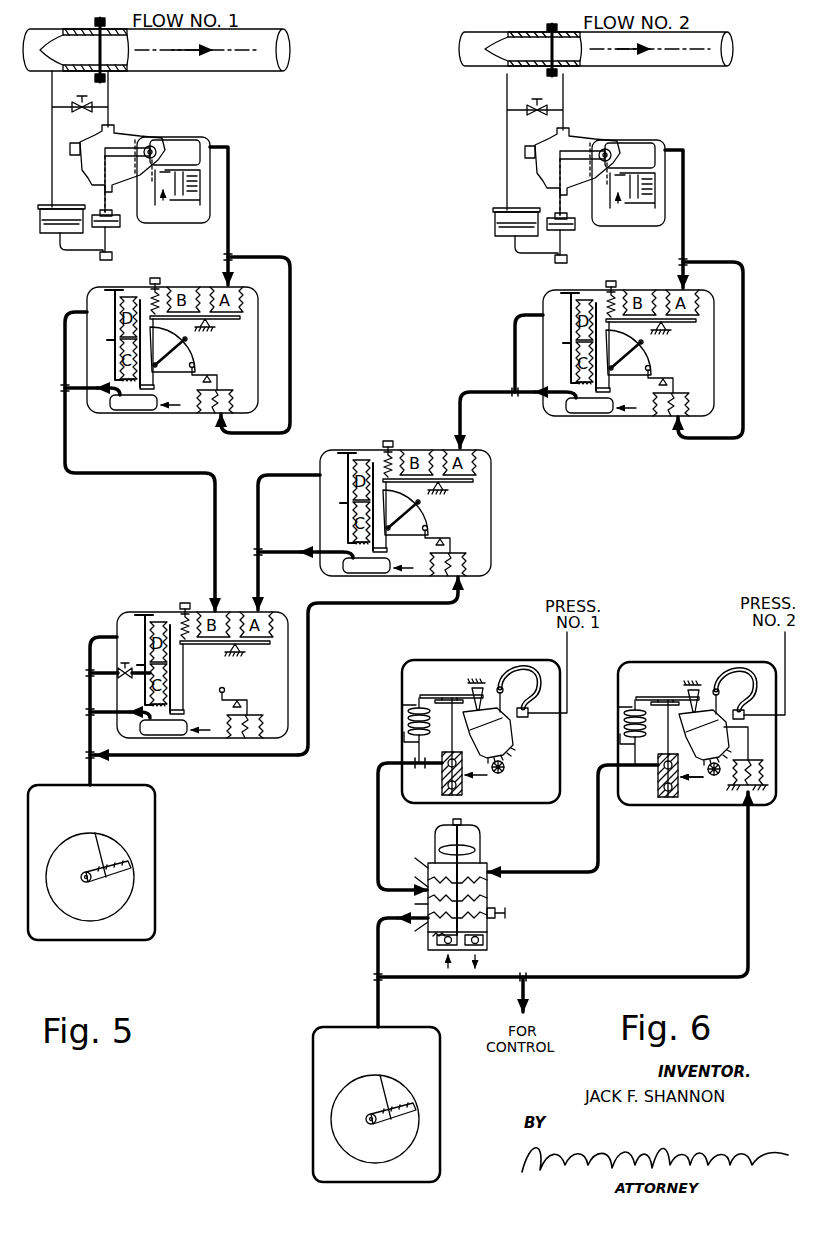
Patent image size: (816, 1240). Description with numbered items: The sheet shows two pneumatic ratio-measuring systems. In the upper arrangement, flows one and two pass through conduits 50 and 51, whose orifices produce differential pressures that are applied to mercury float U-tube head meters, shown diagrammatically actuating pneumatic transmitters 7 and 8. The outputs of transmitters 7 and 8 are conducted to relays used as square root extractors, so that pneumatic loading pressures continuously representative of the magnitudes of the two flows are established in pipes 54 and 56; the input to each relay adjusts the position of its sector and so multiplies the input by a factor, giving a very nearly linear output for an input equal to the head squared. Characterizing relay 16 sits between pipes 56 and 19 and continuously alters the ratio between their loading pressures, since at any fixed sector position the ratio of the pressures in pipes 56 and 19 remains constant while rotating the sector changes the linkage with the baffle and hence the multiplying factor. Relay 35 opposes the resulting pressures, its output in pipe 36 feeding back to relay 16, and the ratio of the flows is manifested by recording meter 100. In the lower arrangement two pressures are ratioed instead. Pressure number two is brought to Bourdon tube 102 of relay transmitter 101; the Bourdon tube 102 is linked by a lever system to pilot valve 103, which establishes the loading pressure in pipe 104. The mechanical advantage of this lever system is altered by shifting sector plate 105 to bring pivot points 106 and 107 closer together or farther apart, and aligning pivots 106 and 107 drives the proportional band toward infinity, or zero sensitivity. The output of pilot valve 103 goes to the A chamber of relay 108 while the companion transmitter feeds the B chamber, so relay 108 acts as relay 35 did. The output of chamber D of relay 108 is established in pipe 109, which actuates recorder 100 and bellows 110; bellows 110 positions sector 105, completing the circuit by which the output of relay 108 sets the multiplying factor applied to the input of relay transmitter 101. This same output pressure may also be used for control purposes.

In FIG. 5, the pneumatic transmitter 7 is at (190, 137).
In FIG. 5, the pneumatic transmitter 8 is at (650, 137).
In FIG. 5, the characterizing relay 16 is at (491, 512).
In FIG. 5, the pipe 19 is at (259, 518).
In FIG. 5, the relay 35 is at (157, 612).
In FIG. 5, the pipe 36 is at (250, 758).
In FIG. 5, the conduit 50 is at (253, 73).
In FIG. 5, the conduit 51 is at (712, 70).
In FIG. 5, the pipe 54 is at (214, 514).
In FIG. 5, the pipe 56 is at (458, 392).
In FIG. 5, the recording meter 100 is at (155, 843).
In FIG. 6, the recording meter 100 is at (313, 1070).
In FIG. 6, the relay transmitter 101 is at (695, 732).
In FIG. 6, the Bourdon tube 102 is at (733, 665).
In FIG. 6, the pilot valve 103 is at (660, 785).
In FIG. 6, the pipe 104 is at (597, 852).
In FIG. 6, the sector plate 105 is at (708, 752).
In FIG. 6, the pivot point 106 is at (700, 708).
In FIG. 6, the pivot point 107 is at (696, 778).
In FIG. 6, the relay 108 is at (480, 840).
In FIG. 6, the pipe 109 is at (747, 910).
In FIG. 6, the bellows 110 is at (770, 777).